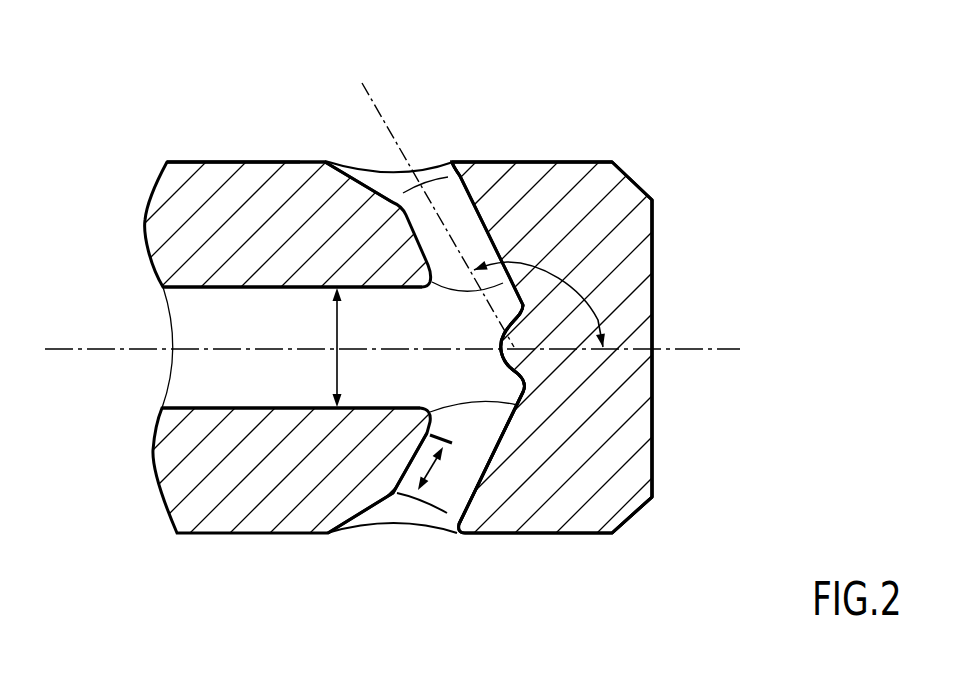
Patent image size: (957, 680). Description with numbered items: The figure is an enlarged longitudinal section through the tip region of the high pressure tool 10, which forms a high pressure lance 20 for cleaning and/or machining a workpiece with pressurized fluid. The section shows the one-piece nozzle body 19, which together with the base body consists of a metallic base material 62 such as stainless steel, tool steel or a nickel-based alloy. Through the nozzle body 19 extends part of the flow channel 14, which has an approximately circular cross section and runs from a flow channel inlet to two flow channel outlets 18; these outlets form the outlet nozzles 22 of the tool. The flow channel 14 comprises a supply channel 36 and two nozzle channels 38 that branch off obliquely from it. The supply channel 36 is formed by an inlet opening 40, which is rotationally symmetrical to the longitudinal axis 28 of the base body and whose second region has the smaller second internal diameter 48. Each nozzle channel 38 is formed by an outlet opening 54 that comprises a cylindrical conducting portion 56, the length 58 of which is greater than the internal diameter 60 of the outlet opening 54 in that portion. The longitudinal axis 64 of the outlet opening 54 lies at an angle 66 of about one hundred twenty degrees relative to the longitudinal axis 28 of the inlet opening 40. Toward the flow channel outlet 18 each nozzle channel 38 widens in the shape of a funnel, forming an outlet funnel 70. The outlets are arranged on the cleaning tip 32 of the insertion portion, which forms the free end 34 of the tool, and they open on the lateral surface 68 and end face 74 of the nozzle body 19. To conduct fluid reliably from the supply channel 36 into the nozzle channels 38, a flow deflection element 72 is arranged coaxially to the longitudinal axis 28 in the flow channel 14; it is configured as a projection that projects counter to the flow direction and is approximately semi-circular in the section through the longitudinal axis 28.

The high pressure tool 10 is at (675, 115).
The flow channel 14 is at (195, 384).
The flow channel outlets 18 is at (416, 327).
The nozzle body 19 is at (262, 148).
The high pressure lance 20 is at (741, 142).
The outlet nozzles 22 is at (440, 148).
The longitudinal axis 28 is at (70, 350).
The cleaning tip 32 is at (683, 559).
The free end 34 is at (645, 531).
The supply channel 36 is at (240, 387).
The nozzle channels 38 is at (487, 457).
The inlet opening 40 is at (193, 287).
The second internal diameter 48 is at (340, 324).
The outlet opening 54 is at (437, 215).
The conducting portion 56 is at (395, 463).
The length 58 is at (430, 470).
The internal diameter 60 is at (447, 164).
The metallic base material 62 is at (187, 167).
The longitudinal axis of the outlet opening 64 is at (377, 107).
The angle 66 is at (570, 285).
The lateral surface 68 is at (565, 161).
The outlet funnel 70 is at (350, 153).
The flow deflection element 72 is at (527, 361).
The end face 74 is at (652, 407).